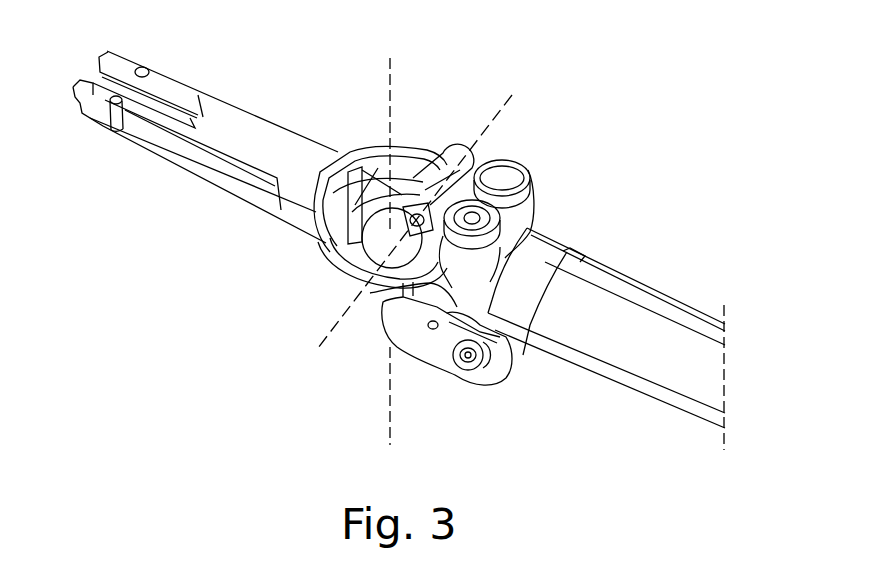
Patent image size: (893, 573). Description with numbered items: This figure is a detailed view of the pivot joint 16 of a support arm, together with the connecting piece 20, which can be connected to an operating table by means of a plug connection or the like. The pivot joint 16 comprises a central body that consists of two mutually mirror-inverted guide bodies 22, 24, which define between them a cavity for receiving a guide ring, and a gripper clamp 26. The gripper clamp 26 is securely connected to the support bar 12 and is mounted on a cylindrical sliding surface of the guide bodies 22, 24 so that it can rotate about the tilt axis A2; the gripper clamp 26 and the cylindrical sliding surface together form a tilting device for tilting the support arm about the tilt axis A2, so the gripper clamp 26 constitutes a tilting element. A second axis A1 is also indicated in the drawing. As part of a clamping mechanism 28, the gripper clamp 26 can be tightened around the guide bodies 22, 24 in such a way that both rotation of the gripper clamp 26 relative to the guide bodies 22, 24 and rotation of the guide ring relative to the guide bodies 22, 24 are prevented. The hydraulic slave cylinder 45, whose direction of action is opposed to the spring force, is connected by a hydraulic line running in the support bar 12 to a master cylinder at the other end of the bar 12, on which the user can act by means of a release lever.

The support bar 12 is at (607, 313).
The pivot joint 16 is at (463, 112).
The connecting piece 20 is at (213, 157).
The guide body 22 is at (335, 158).
The guide body 24 is at (330, 345).
The gripper clamp 26 is at (322, 235).
The clamping mechanism 28 is at (536, 170).
The hydraulic slave cylinder 45 is at (482, 374).
The first axis A1 is at (389, 72).
The tilt axis A2 is at (313, 352).